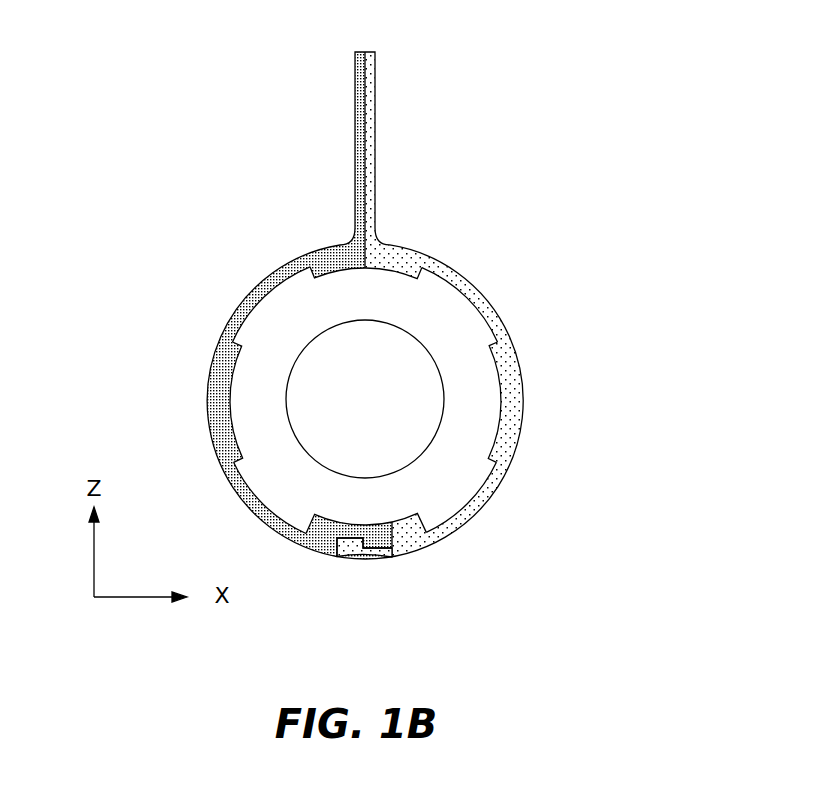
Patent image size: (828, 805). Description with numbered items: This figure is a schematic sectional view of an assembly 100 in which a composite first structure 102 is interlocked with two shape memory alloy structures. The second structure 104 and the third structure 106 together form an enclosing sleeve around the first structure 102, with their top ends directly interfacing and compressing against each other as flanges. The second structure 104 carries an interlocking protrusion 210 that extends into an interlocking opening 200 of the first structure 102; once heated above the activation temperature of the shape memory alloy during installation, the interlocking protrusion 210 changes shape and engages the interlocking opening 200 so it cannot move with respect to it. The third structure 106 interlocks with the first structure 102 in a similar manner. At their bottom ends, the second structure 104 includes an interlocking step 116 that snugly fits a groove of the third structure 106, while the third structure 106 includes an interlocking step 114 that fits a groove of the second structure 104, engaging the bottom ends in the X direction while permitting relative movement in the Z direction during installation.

The assembly 100 is at (492, 193).
The first structure 102 is at (467, 478).
The second structure 104 is at (515, 387).
The third structure 106 is at (208, 372).
The interlocking step 114 is at (383, 550).
The interlocking step 116 is at (350, 547).
The interlocking opening 200 is at (508, 462).
The interlocking protrusion 210 is at (513, 350).